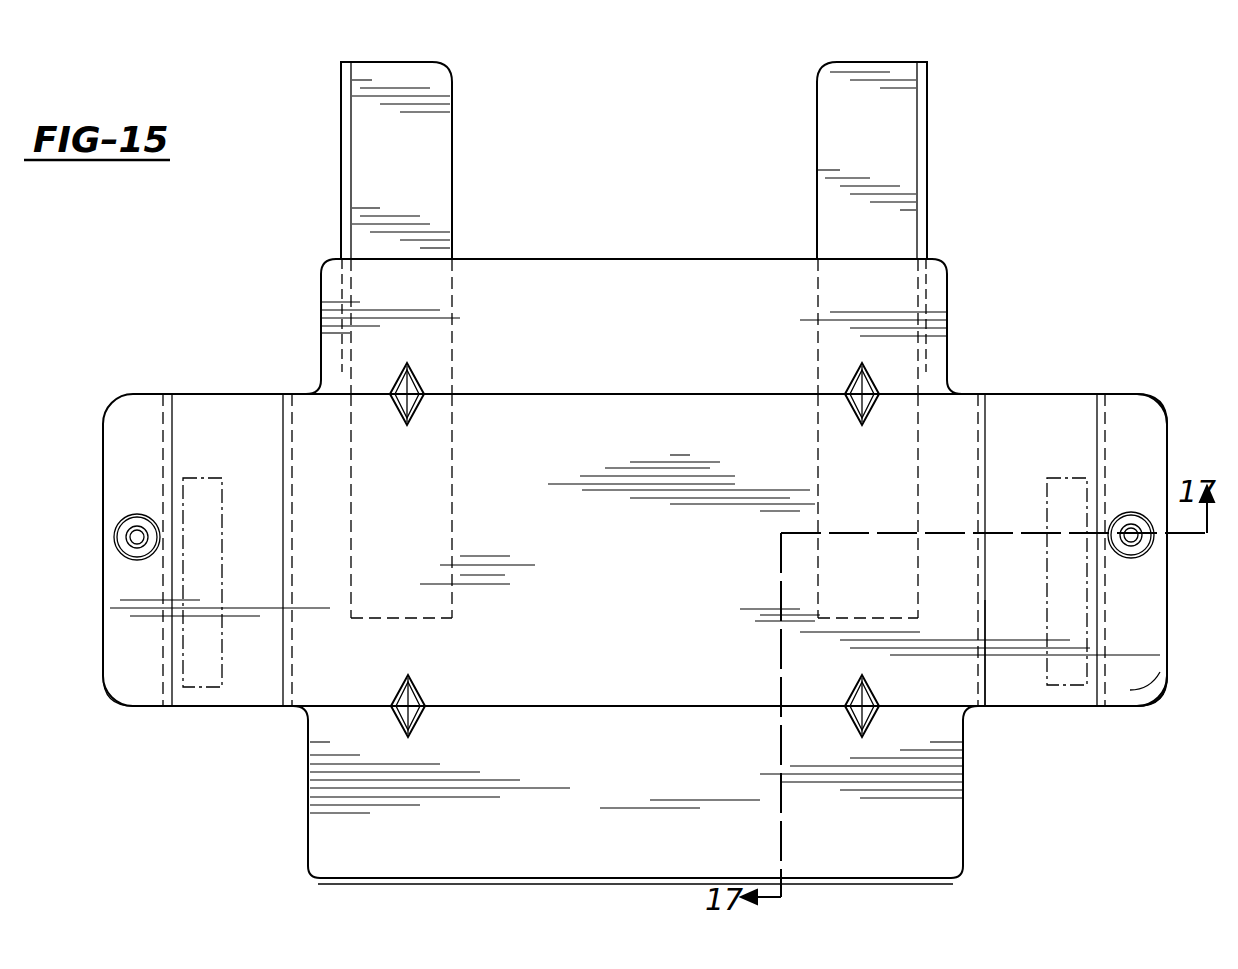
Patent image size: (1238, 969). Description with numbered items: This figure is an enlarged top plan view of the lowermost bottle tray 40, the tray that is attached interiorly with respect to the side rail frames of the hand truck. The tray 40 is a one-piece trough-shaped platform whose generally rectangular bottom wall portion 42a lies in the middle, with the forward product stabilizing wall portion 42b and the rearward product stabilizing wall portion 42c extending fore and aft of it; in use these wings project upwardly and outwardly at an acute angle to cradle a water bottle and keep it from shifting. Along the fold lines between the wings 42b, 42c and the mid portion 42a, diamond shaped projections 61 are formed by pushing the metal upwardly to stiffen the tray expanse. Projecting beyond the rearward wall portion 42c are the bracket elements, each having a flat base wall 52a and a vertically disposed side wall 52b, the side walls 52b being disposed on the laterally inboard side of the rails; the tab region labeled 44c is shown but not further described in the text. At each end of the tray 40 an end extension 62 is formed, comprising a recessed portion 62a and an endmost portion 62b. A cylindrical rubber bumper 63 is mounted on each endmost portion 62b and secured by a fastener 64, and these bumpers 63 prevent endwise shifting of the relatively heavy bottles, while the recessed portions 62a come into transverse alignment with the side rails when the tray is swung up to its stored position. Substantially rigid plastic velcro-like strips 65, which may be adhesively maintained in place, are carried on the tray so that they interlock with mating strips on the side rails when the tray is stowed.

The lower bottle tray 40 is at (988, 378).
The bottom wall portion 42a is at (332, 690).
The forward product stabilizing wall portion 42b is at (925, 855).
The rearward product stabilizing wall portion 42c is at (330, 296).
The tab 44c is at (425, 58).
The flat base wall 52a is at (432, 192).
The side wall 52b is at (342, 210).
The diamond shaped projection 61 is at (870, 390).
The end extension 62 is at (1112, 398).
The recessed portion 62a is at (1036, 712).
The endmost portion 62b is at (1140, 692).
The cylindrical rubber bumper 63 is at (128, 560).
The fastener 64 is at (132, 530).
The velcro-like strip 65 is at (228, 690).